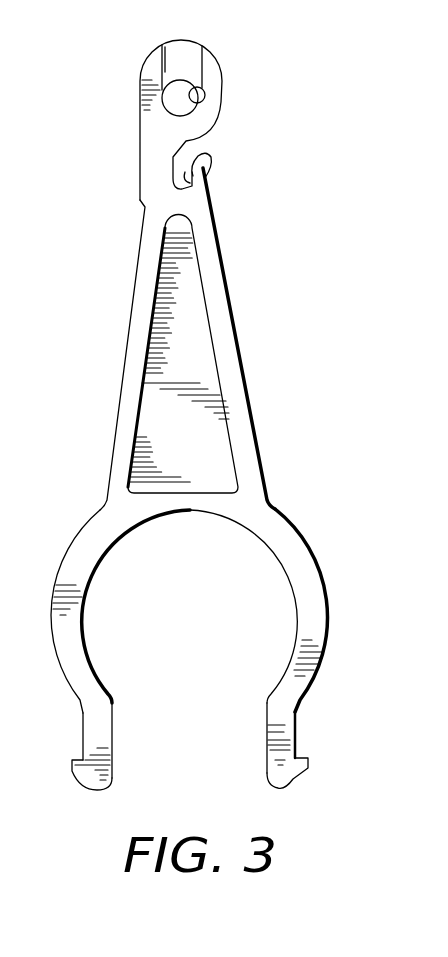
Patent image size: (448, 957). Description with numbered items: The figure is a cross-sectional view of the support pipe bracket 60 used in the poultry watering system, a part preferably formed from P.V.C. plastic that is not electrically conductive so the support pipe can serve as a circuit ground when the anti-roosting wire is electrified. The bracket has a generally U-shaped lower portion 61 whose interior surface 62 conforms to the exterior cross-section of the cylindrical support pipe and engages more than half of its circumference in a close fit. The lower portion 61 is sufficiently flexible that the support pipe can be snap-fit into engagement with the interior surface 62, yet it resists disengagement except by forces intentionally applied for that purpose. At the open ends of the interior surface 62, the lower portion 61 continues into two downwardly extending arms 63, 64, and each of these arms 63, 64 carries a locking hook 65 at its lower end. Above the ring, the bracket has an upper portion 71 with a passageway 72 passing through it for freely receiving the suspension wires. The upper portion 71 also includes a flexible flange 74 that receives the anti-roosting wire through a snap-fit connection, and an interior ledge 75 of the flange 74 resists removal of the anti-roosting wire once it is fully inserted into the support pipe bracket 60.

The support pipe bracket 60 is at (279, 431).
The lower portion 61 is at (323, 568).
The interior surface 62 is at (297, 664).
The arm 63 is at (283, 732).
The arm 64 is at (103, 733).
The locking hook 65 is at (88, 775).
The upper portion 71 is at (232, 125).
The passageway 72 is at (203, 103).
The flexible flange 74 is at (208, 163).
The interior ledge 75 is at (204, 175).